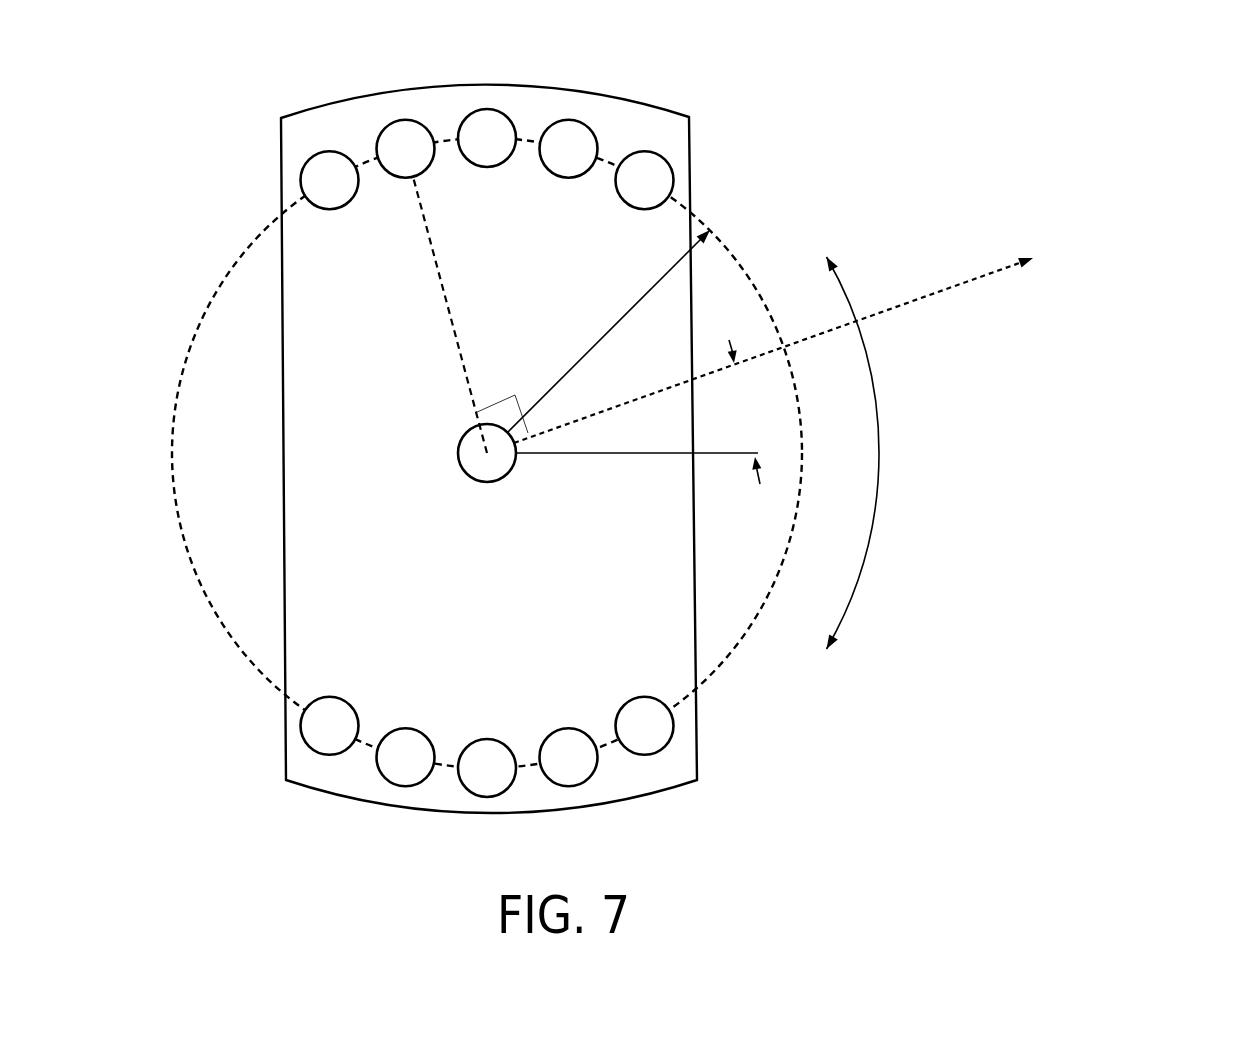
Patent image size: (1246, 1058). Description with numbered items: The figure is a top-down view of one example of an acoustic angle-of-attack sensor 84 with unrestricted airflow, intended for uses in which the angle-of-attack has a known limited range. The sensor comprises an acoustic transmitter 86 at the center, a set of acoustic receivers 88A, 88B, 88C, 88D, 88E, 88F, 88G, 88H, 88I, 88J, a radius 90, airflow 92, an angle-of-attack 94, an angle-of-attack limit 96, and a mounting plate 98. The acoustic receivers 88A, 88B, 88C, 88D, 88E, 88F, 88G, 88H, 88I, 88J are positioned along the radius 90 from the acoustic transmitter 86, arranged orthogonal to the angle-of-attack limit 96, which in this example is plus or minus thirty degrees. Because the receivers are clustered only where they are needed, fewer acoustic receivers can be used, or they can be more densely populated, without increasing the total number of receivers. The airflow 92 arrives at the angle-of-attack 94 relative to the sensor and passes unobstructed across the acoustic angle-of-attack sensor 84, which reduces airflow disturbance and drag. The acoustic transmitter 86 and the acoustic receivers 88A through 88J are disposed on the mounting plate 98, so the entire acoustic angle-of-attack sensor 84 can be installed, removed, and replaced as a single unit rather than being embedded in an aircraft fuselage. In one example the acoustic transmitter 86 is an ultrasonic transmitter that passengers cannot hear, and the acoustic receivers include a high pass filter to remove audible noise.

The acoustic angle-of-attack sensor 84 is at (1158, 61).
The acoustic transmitter 86 is at (470, 478).
The acoustic receiver 88A is at (626, 203).
The acoustic receiver 88B is at (573, 120).
The acoustic receiver 88C is at (490, 167).
The acoustic receiver 88D is at (411, 120).
The acoustic receiver 88E is at (333, 208).
The acoustic receiver 88F is at (335, 697).
The acoustic receiver 88G is at (408, 728).
The acoustic receiver 88H is at (489, 739).
The acoustic receiver 88I is at (565, 728).
The acoustic receiver 88J is at (646, 697).
The radius 90 is at (563, 377).
The airflow 92 is at (1037, 256).
The angle-of-attack 94 is at (775, 411).
The angle-of-attack limit 96 is at (868, 547).
The mounting plate 98 is at (277, 113).